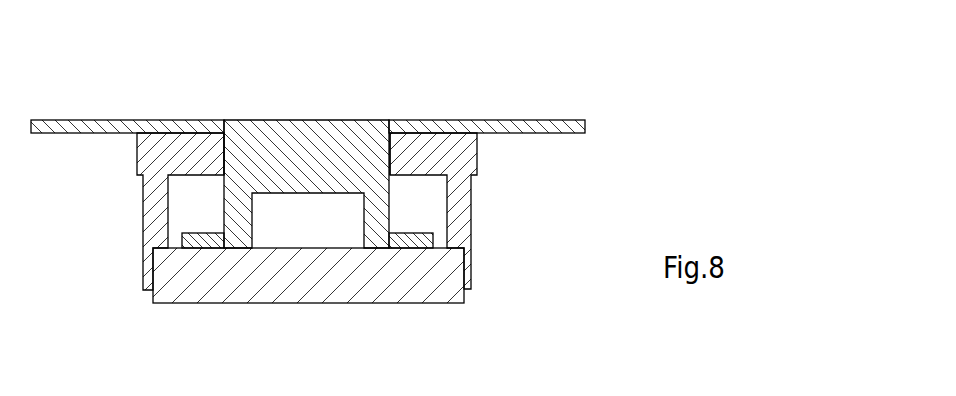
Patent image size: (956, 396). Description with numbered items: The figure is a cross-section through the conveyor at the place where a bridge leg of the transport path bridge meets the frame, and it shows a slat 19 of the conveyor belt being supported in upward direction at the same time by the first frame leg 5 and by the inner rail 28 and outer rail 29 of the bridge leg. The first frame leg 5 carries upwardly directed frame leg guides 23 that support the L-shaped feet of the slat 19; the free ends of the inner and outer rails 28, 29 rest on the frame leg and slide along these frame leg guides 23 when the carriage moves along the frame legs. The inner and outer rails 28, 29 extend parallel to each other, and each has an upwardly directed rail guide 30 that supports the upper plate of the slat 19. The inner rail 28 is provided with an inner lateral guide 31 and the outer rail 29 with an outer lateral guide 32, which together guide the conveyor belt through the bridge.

The first frame leg 5 is at (182, 285).
The slat 19 is at (331, 138).
The frame leg guide 23 is at (207, 246).
The inner rail 28 is at (452, 155).
The outer rail 29 is at (160, 162).
The rail guide 30 is at (189, 133).
The inner lateral guide 31 is at (390, 162).
The outer lateral guide 32 is at (226, 158).